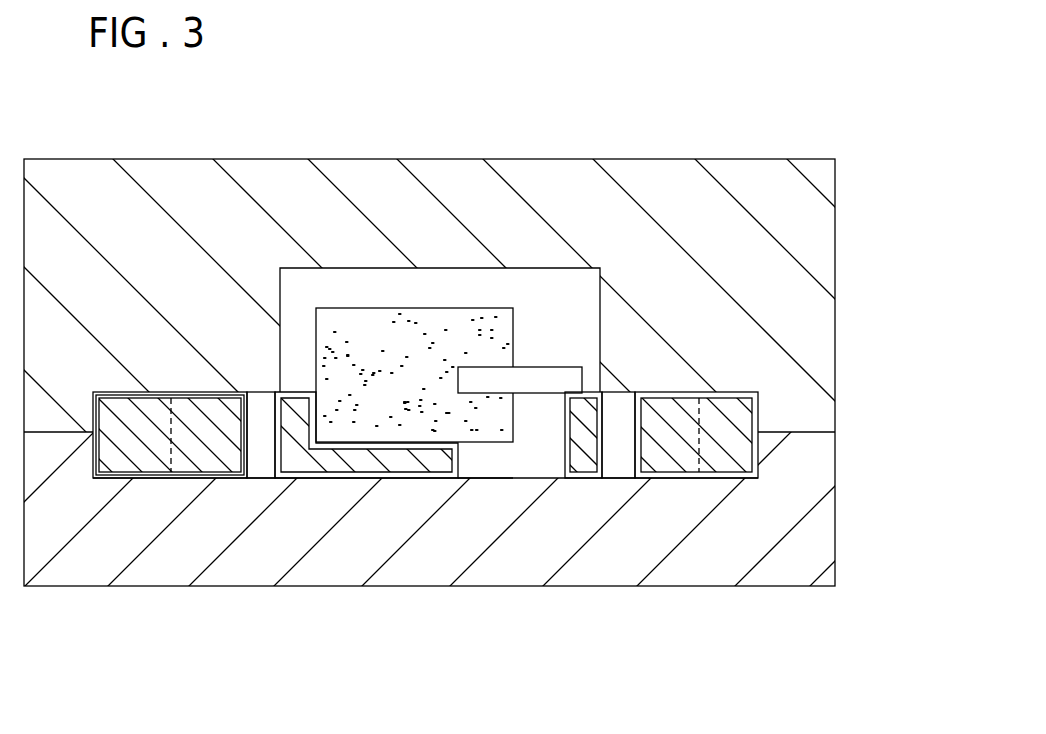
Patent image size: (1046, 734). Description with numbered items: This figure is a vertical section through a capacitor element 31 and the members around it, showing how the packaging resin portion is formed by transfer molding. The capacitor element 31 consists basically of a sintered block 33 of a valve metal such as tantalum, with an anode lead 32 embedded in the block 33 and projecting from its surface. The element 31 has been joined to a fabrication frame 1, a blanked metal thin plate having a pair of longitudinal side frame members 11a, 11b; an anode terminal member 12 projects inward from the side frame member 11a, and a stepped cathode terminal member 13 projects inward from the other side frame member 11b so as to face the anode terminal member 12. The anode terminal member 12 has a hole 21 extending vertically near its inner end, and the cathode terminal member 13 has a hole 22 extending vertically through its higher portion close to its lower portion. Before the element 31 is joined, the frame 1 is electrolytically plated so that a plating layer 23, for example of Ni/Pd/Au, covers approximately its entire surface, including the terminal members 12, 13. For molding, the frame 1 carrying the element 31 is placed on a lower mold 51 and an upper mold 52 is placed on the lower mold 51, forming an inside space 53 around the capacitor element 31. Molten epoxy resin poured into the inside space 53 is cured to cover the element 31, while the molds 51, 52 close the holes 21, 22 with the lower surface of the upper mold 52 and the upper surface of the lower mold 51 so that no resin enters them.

The fabrication frame 1 is at (774, 412).
The side frame member 11a is at (705, 442).
The side frame member 11b is at (130, 450).
The anode terminal member 12 is at (583, 462).
The cathode terminal member 13 is at (310, 463).
The hole 21 is at (635, 445).
The hole 22 is at (250, 452).
The plating layer 23 is at (157, 480).
The capacitor element 31 is at (488, 468).
The anode lead 32 is at (553, 373).
The sintered block 33 is at (368, 322).
The lower mold 51 is at (787, 558).
The upper mold 52 is at (752, 180).
The inside space 53 is at (520, 287).